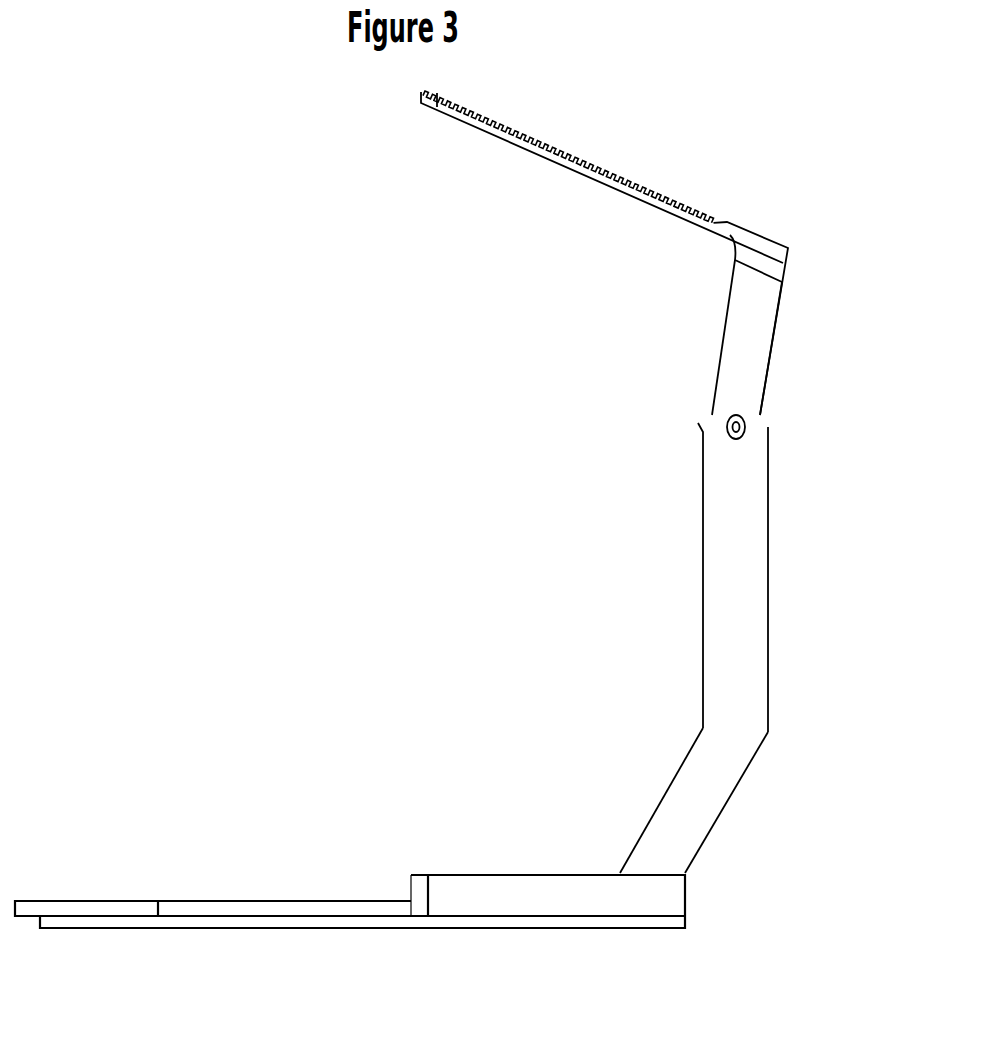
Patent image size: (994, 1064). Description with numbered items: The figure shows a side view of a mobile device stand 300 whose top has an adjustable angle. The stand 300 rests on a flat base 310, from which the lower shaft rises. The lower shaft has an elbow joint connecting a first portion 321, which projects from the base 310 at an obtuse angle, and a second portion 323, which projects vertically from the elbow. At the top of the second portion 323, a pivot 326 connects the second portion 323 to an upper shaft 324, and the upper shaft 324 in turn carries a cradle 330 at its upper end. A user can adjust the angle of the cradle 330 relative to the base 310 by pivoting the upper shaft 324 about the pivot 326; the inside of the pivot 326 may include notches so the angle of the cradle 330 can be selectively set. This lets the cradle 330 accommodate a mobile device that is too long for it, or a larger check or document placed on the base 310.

The stand 300 is at (778, 138).
The base 310 is at (350, 839).
The first portion 321 is at (678, 800).
The second portion 323 is at (762, 577).
The upper shaft 324 is at (783, 337).
The pivot 326 is at (690, 430).
The cradle 330 is at (604, 234).